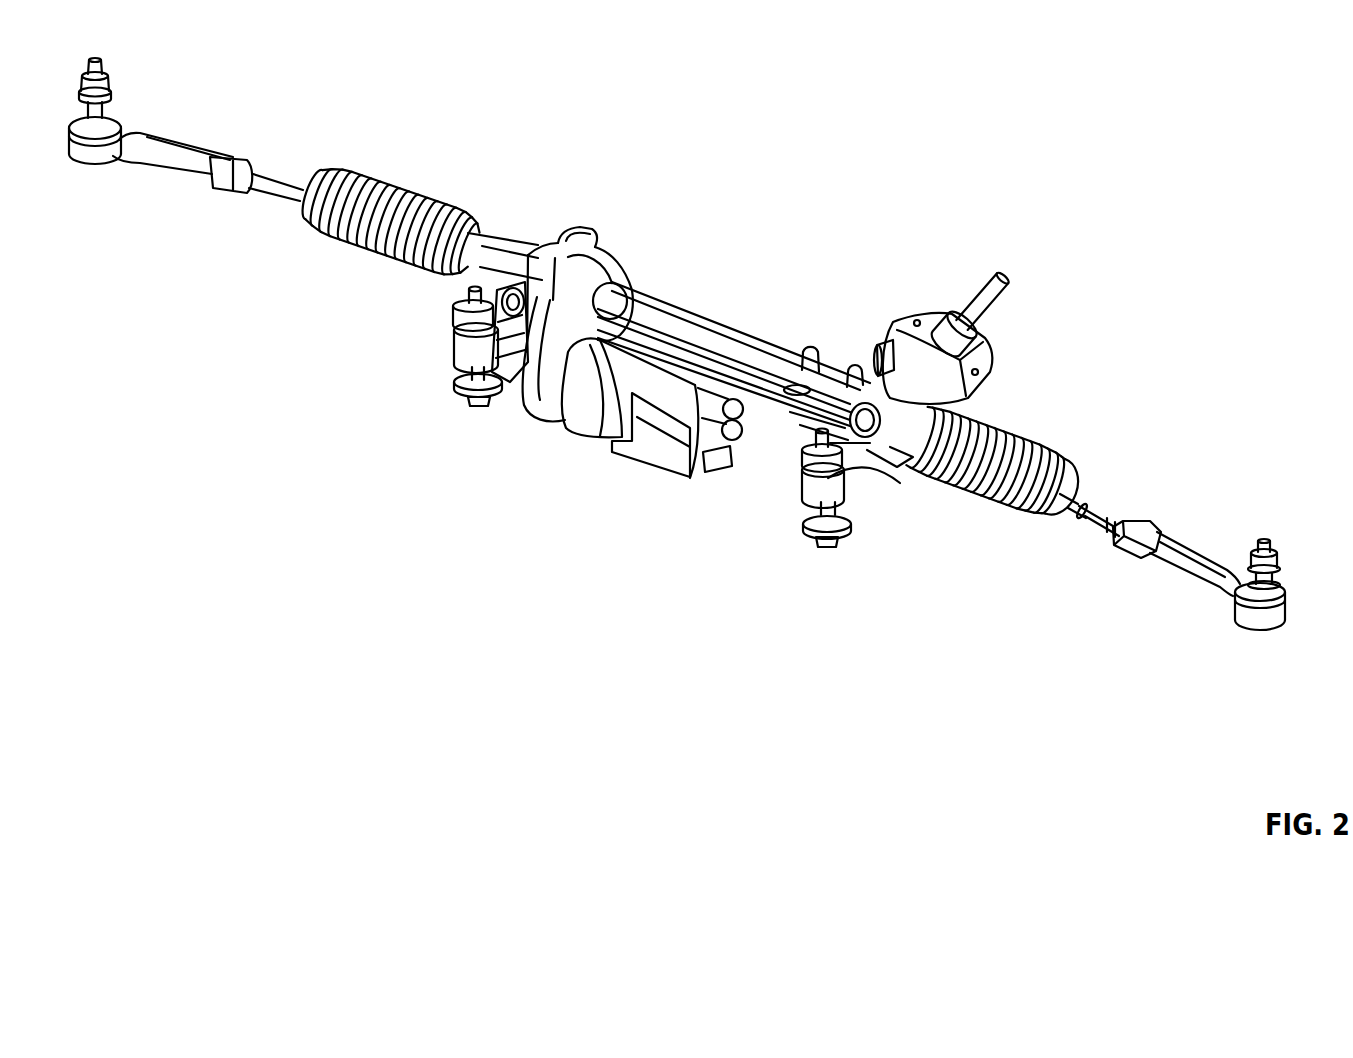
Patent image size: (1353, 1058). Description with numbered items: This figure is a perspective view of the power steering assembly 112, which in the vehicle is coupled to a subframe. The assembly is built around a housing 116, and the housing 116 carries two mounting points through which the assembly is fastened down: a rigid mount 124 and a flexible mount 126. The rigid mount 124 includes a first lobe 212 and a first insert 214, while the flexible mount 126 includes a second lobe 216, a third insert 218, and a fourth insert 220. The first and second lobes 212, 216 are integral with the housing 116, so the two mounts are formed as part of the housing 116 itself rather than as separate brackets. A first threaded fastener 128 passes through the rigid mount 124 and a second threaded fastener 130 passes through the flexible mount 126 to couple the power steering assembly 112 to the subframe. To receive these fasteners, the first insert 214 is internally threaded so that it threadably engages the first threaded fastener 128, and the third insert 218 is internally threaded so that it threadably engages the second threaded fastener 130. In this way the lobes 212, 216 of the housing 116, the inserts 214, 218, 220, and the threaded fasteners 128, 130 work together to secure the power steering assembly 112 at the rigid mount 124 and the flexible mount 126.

The power steering assembly 112 is at (512, 238).
The housing 116 is at (665, 318).
The rigid mount 124 is at (800, 492).
The flexible mount 126 is at (457, 340).
The first threaded fastener 128 is at (828, 548).
The second threaded fastener 130 is at (482, 408).
The first lobe 212 is at (836, 472).
The first insert 214 is at (870, 470).
The second lobe 216 is at (458, 363).
The third insert 218 is at (465, 302).
The fourth insert 220 is at (457, 388).